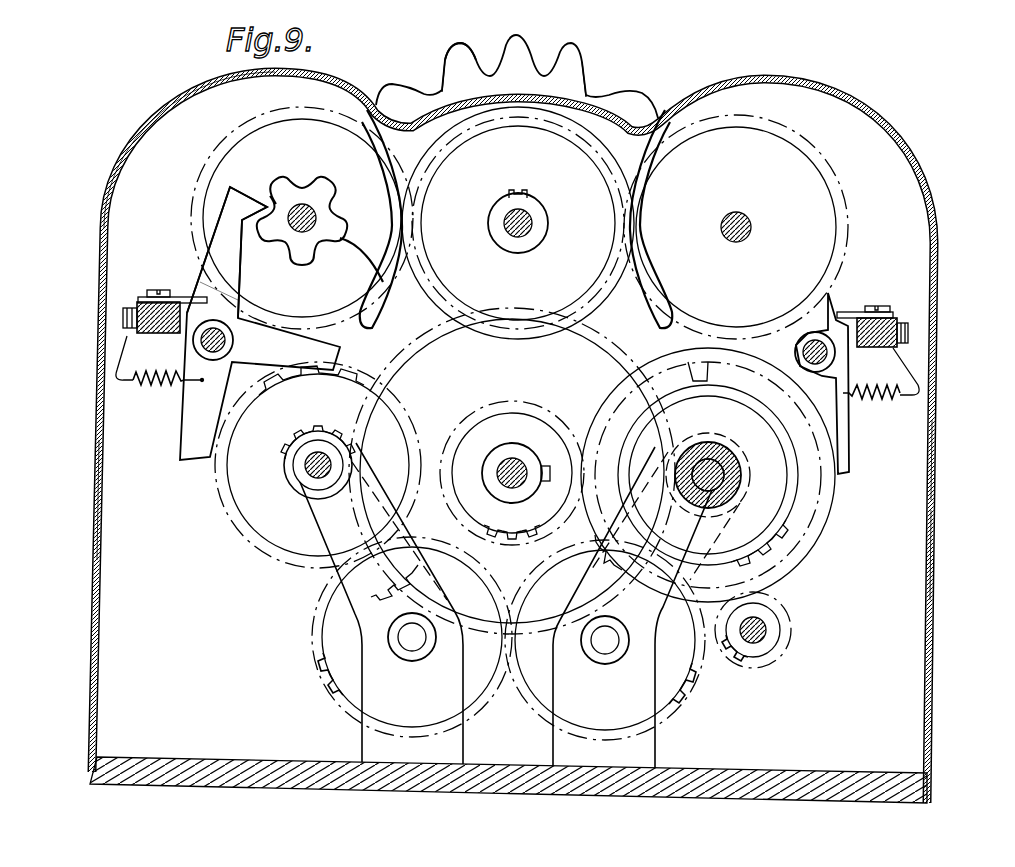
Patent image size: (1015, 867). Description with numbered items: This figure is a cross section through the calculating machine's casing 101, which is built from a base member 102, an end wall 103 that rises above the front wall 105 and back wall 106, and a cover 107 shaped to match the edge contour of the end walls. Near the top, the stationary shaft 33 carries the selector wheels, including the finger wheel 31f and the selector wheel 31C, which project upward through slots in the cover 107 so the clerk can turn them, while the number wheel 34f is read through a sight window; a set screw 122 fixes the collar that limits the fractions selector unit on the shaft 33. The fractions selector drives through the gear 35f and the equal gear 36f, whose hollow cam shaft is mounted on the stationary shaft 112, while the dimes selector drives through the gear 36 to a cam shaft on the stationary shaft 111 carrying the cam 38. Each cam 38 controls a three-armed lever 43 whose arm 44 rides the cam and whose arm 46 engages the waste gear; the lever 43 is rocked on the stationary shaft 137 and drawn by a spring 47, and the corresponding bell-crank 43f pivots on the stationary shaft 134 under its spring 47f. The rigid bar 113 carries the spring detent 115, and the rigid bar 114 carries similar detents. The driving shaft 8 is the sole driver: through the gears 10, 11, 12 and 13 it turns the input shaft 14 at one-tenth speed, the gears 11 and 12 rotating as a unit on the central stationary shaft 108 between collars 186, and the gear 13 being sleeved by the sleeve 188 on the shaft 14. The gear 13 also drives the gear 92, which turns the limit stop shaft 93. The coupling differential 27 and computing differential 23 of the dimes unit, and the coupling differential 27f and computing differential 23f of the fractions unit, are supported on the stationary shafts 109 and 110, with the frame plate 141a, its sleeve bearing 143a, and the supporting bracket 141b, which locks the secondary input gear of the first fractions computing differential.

The casing 101 is at (942, 625).
The base member 102 is at (857, 780).
The end wall 103 is at (913, 469).
The front wall 105 is at (95, 505).
The back wall 106 is at (933, 548).
The cover 107 is at (99, 222).
The finger wheel 31f is at (548, 82).
The selector wheel 31C is at (458, 63).
The gear 36 is at (232, 133).
The cam 38 is at (280, 184).
The stationary shaft 111 is at (316, 217).
The number wheel 34f is at (593, 130).
The gear 35f is at (440, 302).
The collar 186 is at (497, 213).
The stationary shaft 33 is at (533, 223).
The set screw 122 is at (524, 187).
The gear 36f is at (808, 146).
The stationary shaft 112 is at (744, 223).
The gear 12 is at (457, 437).
The central stationary shaft 108 is at (511, 460).
The coupling differential 27 is at (215, 512).
The shaft 8 is at (300, 467).
The gear 10 is at (313, 430).
The gear 11 is at (397, 584).
The sleeve bearing 143a is at (420, 661).
The gear 13 is at (836, 493).
The coupling differential 27f is at (802, 537).
The input shaft 14 is at (722, 471).
The sleeve 188 is at (705, 450).
The stationary frame plate 141a is at (363, 645).
The stationary shaft 109 is at (405, 641).
The computing differential 23 is at (318, 683).
The supporting bracket 141b is at (560, 695).
The stationary shaft 110 is at (608, 648).
The computing differential 23f is at (683, 718).
The shaft 93 is at (768, 630).
The gear 92 is at (736, 667).
The arm 46 is at (187, 443).
The arm 44 is at (230, 212).
The three-armed lever 43 is at (200, 282).
The stationary shaft 137 is at (222, 341).
The rigid bar 113 is at (160, 326).
The spring detent 115 is at (187, 296).
The spring 47 is at (162, 390).
The bell-crank 43f is at (840, 303).
The stationary shaft 134 is at (812, 322).
The rigid bar 114 is at (876, 347).
The spring 47f is at (828, 393).